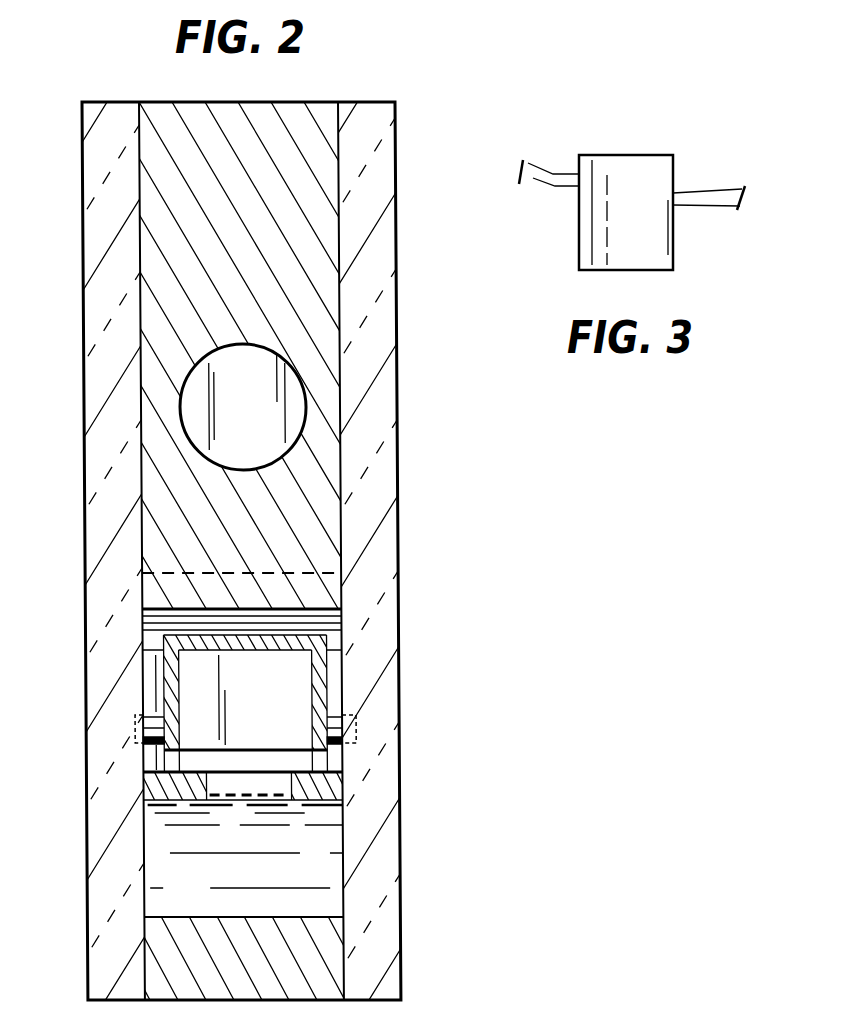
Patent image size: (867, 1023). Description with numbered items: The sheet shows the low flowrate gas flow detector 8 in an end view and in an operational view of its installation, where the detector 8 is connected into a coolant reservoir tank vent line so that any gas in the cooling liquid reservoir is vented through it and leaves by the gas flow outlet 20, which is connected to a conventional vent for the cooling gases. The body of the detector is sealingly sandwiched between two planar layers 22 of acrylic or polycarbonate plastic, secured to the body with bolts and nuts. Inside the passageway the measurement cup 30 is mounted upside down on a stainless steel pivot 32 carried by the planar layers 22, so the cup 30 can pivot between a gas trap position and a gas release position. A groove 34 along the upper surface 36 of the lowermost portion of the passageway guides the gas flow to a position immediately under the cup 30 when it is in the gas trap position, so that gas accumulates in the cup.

In FIG. 3, the low flowrate gas flow detector 8 is at (650, 258).
In FIG. 2, the gas flow outlet 20 is at (293, 388).
In FIG. 2, the planar layers 22 is at (97, 473).
In FIG. 2, the measurement cup 30 is at (300, 661).
In FIG. 2, the pivot 32 is at (342, 727).
In FIG. 2, the groove 34 is at (263, 790).
In FIG. 2, the upper surface 36 is at (160, 803).